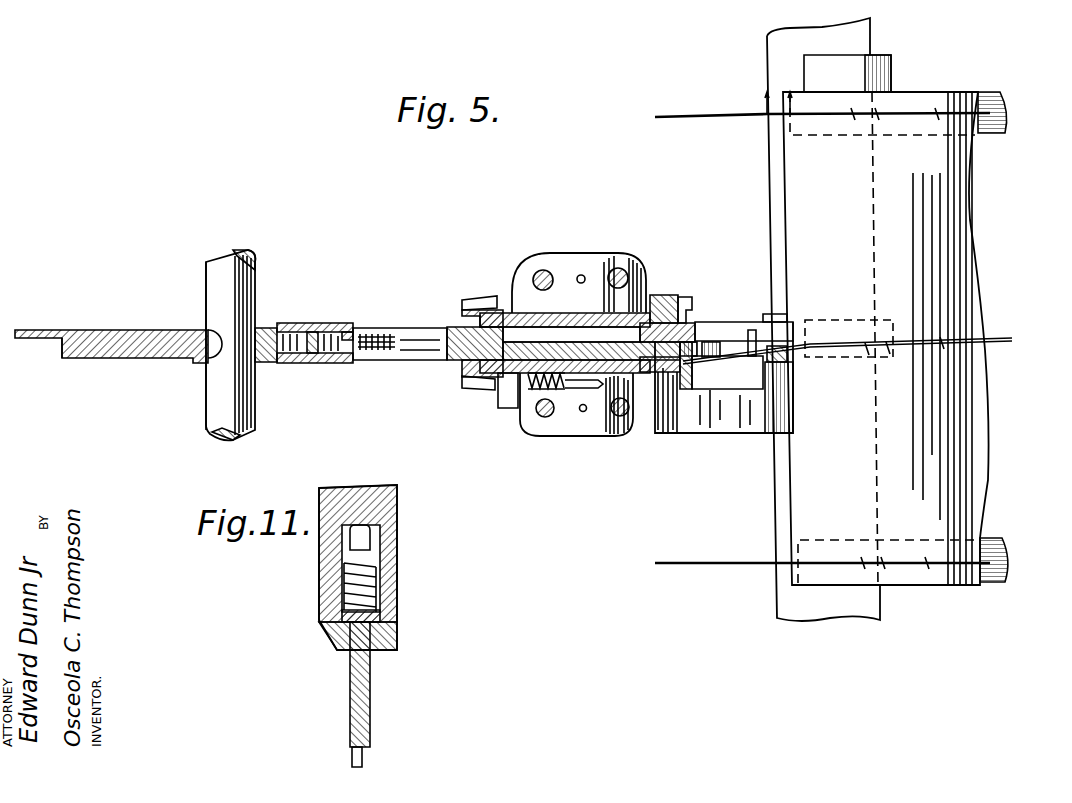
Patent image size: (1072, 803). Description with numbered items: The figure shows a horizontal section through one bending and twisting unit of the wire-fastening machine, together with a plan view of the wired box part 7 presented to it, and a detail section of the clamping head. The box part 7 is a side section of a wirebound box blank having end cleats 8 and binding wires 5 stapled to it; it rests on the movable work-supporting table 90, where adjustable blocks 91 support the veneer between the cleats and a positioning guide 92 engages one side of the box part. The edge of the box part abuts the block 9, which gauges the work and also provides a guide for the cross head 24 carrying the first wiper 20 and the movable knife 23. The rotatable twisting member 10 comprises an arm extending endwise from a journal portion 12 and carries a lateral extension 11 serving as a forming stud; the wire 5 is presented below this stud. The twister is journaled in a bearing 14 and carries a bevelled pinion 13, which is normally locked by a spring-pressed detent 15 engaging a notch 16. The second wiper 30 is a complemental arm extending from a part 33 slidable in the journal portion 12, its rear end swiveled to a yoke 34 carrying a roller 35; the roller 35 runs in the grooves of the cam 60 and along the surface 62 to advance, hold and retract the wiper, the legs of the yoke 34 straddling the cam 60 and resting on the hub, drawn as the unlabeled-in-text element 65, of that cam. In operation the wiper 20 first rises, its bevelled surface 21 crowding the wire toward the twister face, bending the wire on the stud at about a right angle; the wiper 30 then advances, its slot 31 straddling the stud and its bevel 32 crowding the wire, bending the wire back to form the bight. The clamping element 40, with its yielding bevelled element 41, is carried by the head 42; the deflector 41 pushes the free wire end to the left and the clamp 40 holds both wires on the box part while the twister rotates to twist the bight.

In FIG. 5, the wires 5 is at (912, 118).
In FIG. 5, the box part 7 is at (962, 432).
In FIG. 5, the end cleats 8 is at (980, 134).
In FIG. 5, the block 9 is at (738, 420).
In FIG. 5, the twisting member 10 is at (704, 326).
In FIG. 5, the lateral extension 11 is at (778, 360).
In FIG. 5, the journal portion 12 is at (565, 322).
In FIG. 5, the bevelled pinion 13 is at (470, 302).
In FIG. 5, the bearing 14 is at (522, 292).
In FIG. 5, the spring-pressed detent 15 is at (497, 408).
In FIG. 5, the notch 16 is at (482, 389).
In FIG. 5, the wiper 20 is at (733, 342).
In FIG. 5, the bevelled surface 21 is at (752, 340).
In FIG. 5, the movable knife 23 is at (686, 389).
In FIG. 5, the cross head 24 is at (752, 378).
In FIG. 5, the wiper 30 is at (612, 366).
In FIG. 5, the slot 31 is at (662, 297).
In FIG. 5, the bevel 32 is at (680, 298).
In FIG. 5, the part 33 is at (420, 345).
In FIG. 5, the yoke 34 is at (305, 363).
In FIG. 5, the roller 35 is at (300, 327).
In FIG. 11, the clamping element 40 is at (368, 708).
In FIG. 11, the yielding bevelled element 41 is at (352, 755).
In FIG. 11, the head 42 is at (397, 512).
In FIG. 5, the cam 60 is at (103, 329).
In FIG. 5, the surface 62 is at (62, 343).
In FIG. 5, the roller 65 is at (218, 393).
In FIG. 5, the work-supporting table 90 is at (783, 505).
In FIG. 5, the blocks 91 is at (835, 320).
In FIG. 5, the positioning device or guide 92 is at (882, 68).